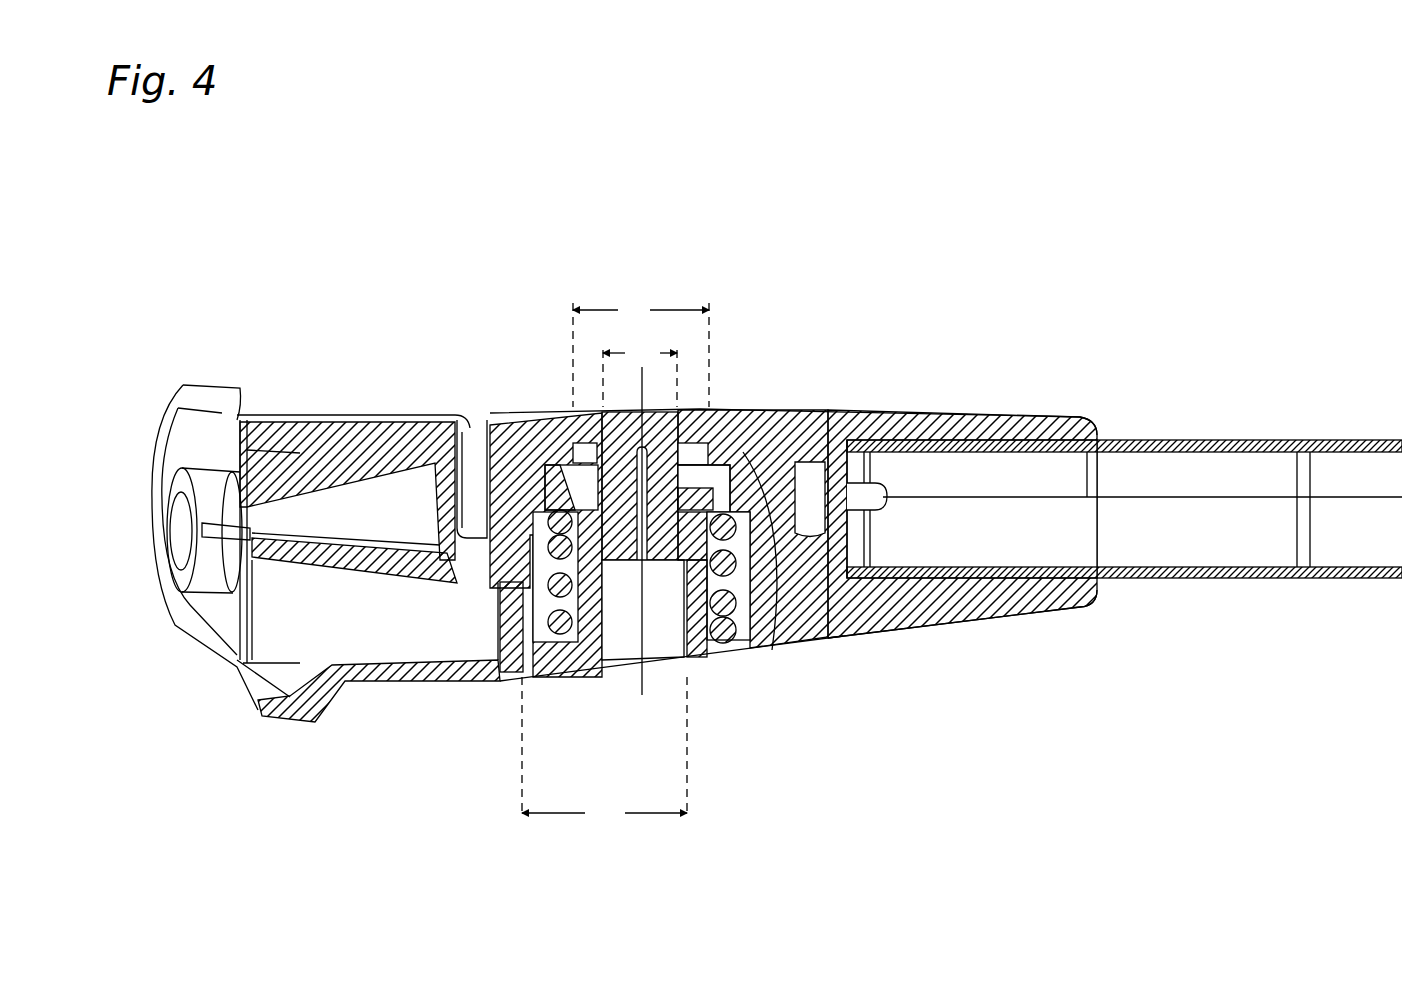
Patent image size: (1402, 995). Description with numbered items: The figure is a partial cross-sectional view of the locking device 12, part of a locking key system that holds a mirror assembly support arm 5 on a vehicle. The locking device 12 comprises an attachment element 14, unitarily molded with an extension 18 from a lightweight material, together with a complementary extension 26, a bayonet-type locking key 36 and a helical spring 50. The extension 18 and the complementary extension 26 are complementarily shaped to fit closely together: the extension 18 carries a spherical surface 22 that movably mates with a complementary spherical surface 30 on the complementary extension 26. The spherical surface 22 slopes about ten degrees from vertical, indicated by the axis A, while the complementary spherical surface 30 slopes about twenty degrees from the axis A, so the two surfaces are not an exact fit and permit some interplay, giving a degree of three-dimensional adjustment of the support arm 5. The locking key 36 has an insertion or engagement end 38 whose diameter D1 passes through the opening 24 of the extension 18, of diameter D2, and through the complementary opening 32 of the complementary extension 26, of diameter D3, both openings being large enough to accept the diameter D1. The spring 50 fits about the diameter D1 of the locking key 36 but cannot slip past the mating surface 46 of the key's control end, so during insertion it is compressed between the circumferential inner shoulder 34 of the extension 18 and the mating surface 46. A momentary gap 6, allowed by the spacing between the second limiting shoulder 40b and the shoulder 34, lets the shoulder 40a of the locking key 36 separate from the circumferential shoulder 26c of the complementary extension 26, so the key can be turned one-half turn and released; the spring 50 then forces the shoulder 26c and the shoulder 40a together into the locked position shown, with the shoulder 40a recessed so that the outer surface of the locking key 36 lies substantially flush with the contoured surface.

The support arm 5 is at (1305, 440).
The gap 6 is at (707, 657).
The locking device 12 is at (750, 200).
The attachment element 14 is at (215, 385).
The extension 18 is at (320, 720).
The spherical surface 22 is at (835, 412).
The aperture or opening 24 is at (497, 673).
The complementary extension 26 is at (995, 418).
The circumferential shoulder 26c is at (573, 447).
The first complementary spherical surface 30 is at (743, 450).
The complementary aperture or opening 32 is at (697, 433).
The circumferential inner surface or shoulder 34 is at (463, 530).
The locking key 36 is at (477, 443).
The insertion or engagement end 38 is at (705, 445).
The ledge or shoulder 40a is at (722, 440).
The second limiting shoulder 40b is at (498, 597).
The mating surface or ledge 46 is at (750, 633).
The helical spring 50 is at (768, 587).
The diameter of the locking key D1 is at (641, 352).
The diameter of the opening D2 is at (604, 753).
The diameter of the complementary opening D3 is at (640, 374).
The axis A is at (637, 687).